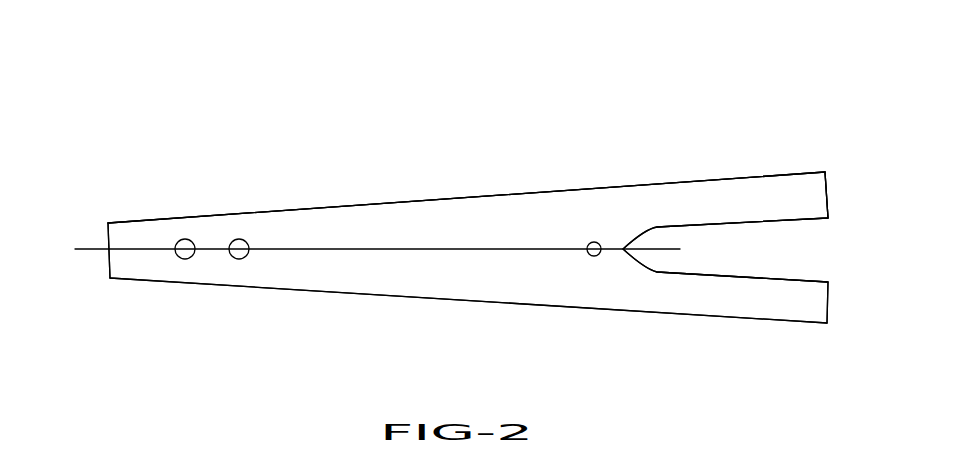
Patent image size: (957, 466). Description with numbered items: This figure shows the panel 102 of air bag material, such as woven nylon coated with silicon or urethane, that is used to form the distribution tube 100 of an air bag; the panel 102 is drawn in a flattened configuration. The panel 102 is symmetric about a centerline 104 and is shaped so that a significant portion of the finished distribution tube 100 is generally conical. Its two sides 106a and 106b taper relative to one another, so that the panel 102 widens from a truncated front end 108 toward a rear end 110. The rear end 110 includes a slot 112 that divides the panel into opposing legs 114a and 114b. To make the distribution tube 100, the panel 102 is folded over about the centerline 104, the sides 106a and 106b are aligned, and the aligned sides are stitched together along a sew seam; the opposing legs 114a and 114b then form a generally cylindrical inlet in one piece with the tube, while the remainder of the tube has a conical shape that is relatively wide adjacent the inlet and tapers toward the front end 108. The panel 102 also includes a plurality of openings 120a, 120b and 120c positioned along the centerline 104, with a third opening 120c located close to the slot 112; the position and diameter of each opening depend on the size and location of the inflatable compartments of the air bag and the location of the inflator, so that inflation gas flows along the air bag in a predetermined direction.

The distribution tube 100 is at (210, 107).
The panel 102 is at (385, 210).
The centerline 104 is at (297, 249).
The side 106a is at (470, 222).
The side 106b is at (480, 277).
The front end 108 is at (105, 230).
The rear end 110 is at (833, 178).
The slot 112 is at (742, 225).
The leg 114a is at (718, 203).
The leg 114b is at (718, 295).
The opening 120a is at (183, 258).
The opening 120b is at (242, 258).
The opening 120c is at (592, 242).